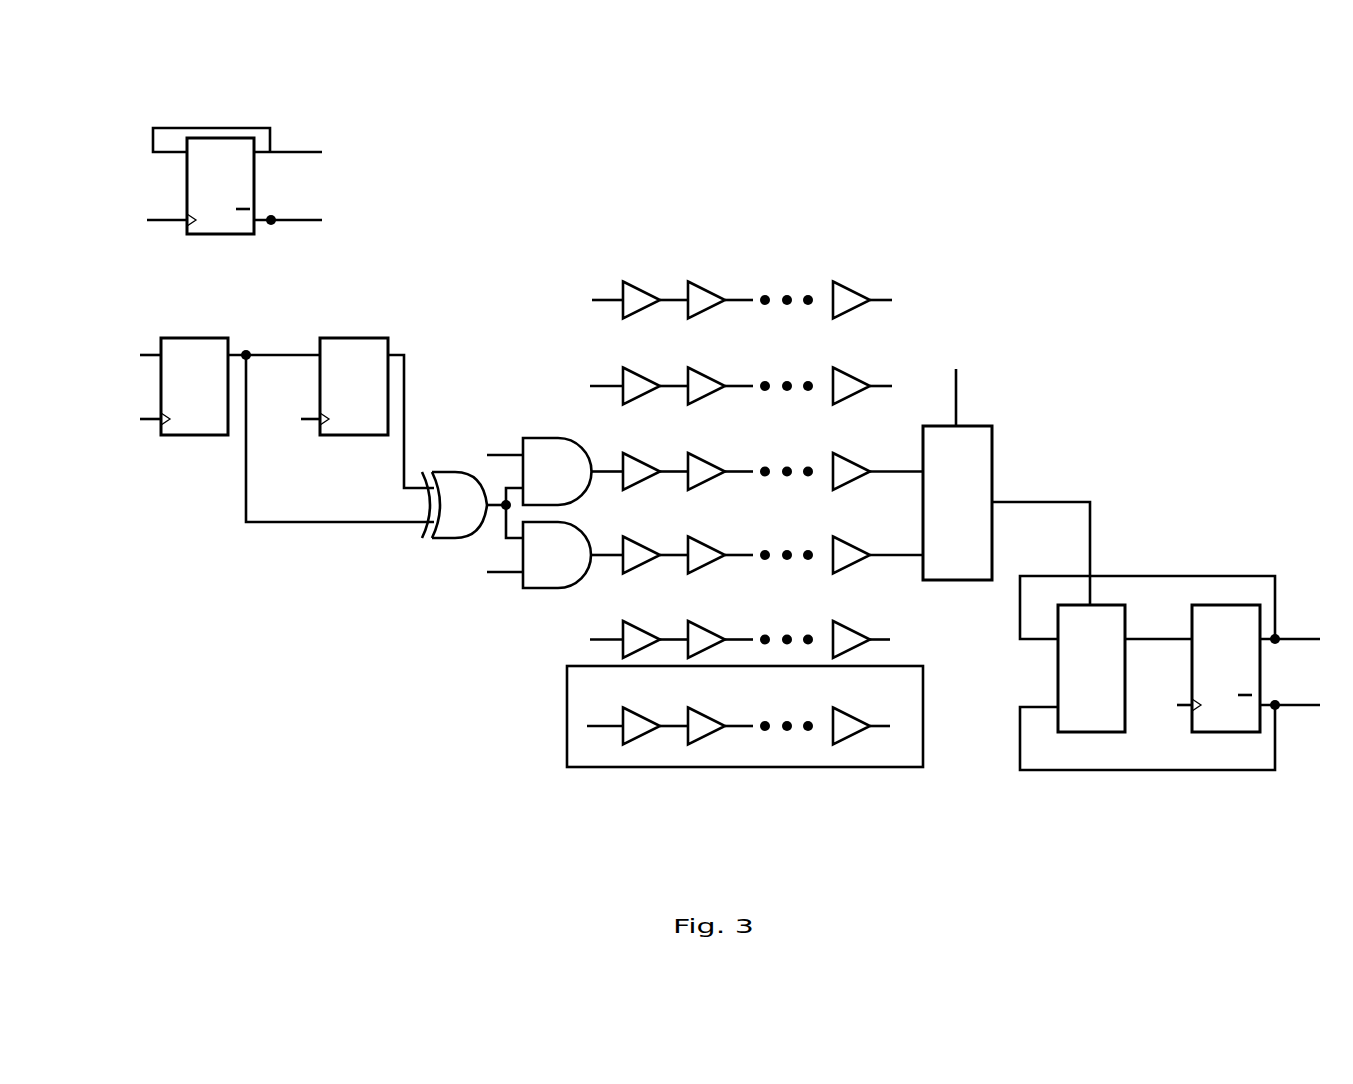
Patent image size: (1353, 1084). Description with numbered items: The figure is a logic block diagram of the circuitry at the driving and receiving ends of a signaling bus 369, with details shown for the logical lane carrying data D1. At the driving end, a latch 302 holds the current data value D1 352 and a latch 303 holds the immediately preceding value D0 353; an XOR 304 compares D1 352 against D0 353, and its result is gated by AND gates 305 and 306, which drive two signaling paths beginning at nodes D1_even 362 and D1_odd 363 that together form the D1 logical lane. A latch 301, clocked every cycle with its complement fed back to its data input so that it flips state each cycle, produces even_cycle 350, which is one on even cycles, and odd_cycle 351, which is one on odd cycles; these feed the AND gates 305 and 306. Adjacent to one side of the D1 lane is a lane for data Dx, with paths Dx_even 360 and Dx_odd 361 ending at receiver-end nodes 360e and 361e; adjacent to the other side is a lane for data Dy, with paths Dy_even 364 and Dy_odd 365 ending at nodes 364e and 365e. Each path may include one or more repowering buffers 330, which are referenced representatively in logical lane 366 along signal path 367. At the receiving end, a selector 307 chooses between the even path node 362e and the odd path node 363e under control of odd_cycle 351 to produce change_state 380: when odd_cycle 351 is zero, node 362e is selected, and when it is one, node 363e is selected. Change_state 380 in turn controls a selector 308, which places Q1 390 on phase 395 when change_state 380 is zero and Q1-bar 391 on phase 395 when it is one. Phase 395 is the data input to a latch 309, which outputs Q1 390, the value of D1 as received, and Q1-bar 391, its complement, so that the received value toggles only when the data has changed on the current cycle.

The latch 301 is at (240, 199).
The latch 302 is at (212, 399).
The latch 303 is at (372, 399).
The XOR 304 is at (480, 516).
The AND gate 305 is at (571, 482).
The AND gate 306 is at (571, 566).
The selector 307 is at (975, 526).
The selector 308 is at (1106, 684).
The latch 309 is at (1244, 684).
The repowering buffers 330 is at (842, 744).
The even_cycle 350 is at (288, 152).
The odd_cycle 351 is at (293, 222).
The D1 352 is at (282, 353).
The D0 353 is at (397, 352).
The Dx_even 360 is at (603, 300).
The receiver end node 360e is at (877, 298).
The Dx_odd 361 is at (598, 386).
The receiver end node 361e is at (878, 385).
The D1_even 362 is at (602, 471).
The receiver end node 362e is at (884, 470).
The D1_odd 363 is at (600, 555).
The receiver end node 363e is at (882, 555).
The Dy_even 364 is at (600, 639).
The receiver end node 364e is at (877, 639).
The Dy_odd 365 is at (738, 748).
The receiver end node 365e is at (870, 724).
The logical lane 366 is at (538, 620).
The signal path 367 is at (585, 767).
The signaling bus 369 is at (892, 203).
The change_state 380 is at (1024, 502).
The Q1 390 is at (1303, 639).
The Q1-bar 391 is at (1308, 705).
The phase 395 is at (1158, 639).